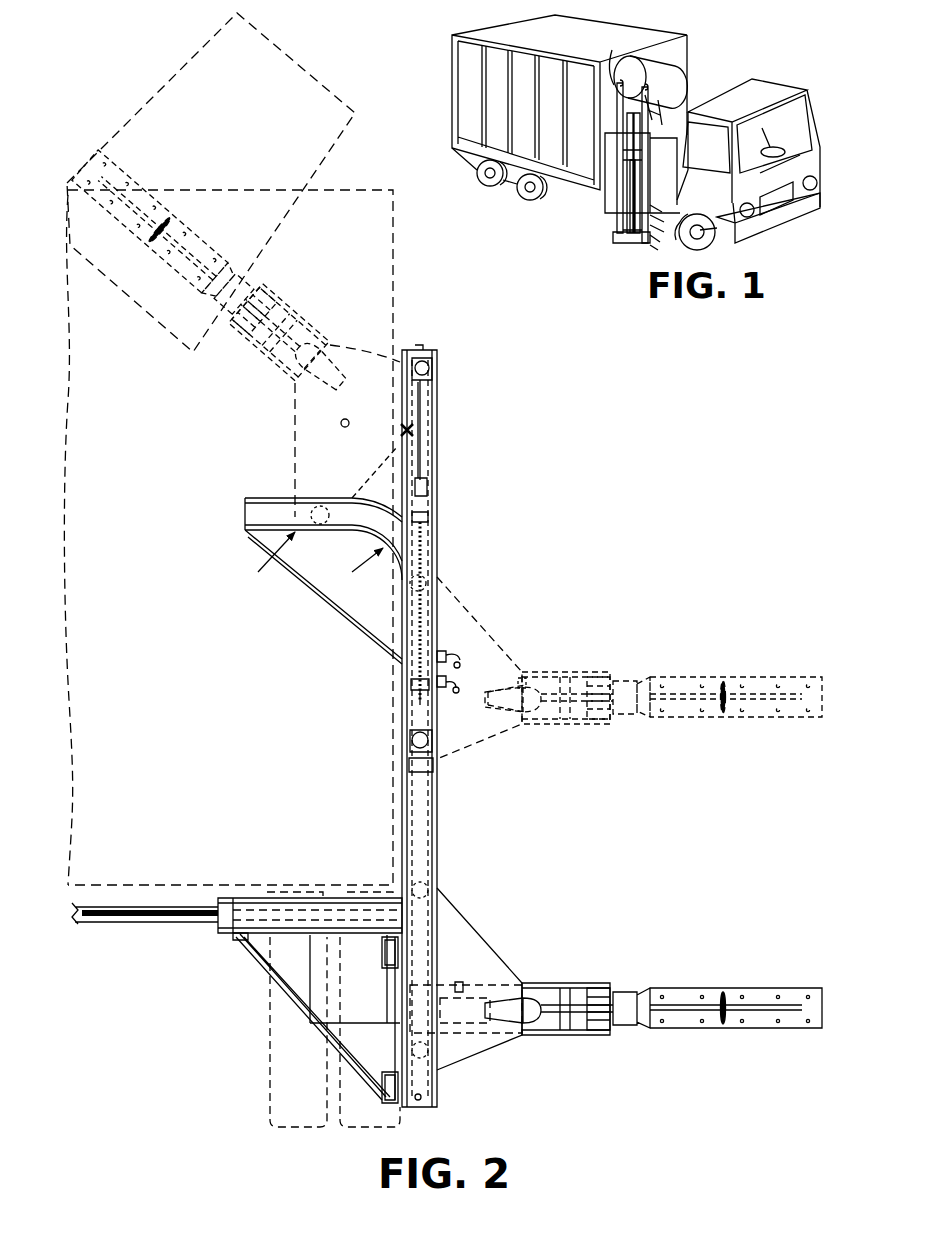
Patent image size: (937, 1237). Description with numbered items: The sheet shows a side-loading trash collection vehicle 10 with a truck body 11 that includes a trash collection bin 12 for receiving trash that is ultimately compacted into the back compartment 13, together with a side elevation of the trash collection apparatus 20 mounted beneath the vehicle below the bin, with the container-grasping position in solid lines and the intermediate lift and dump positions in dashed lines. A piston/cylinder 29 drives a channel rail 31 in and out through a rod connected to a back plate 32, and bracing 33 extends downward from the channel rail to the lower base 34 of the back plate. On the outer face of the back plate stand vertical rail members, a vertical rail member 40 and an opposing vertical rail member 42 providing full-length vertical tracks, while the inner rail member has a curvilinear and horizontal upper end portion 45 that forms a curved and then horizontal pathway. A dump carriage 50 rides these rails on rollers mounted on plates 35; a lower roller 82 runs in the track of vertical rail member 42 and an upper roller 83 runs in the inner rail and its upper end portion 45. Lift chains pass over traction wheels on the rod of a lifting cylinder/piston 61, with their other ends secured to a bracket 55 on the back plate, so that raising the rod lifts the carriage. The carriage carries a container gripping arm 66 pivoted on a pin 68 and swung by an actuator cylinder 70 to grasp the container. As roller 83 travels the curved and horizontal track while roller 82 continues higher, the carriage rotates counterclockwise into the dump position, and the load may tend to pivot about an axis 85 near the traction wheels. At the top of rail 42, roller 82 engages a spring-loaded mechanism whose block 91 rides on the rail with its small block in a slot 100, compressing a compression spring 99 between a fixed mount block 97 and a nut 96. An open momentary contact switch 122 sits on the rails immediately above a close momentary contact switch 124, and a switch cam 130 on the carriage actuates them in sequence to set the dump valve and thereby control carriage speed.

In FIG. 1, the trash collection vehicle 10 is at (617, 132).
In FIG. 1, the truck body 11 is at (655, 27).
In FIG. 2, the truck body 11 is at (396, 273).
In FIG. 1, the trash collection bin 12 is at (668, 140).
In FIG. 1, the back compartment 13 is at (520, 103).
In FIG. 2, the trash collection apparatus 20 is at (443, 570).
In FIG. 2, the piston/cylinder 29 is at (143, 914).
In FIG. 2, the channel rail 31 is at (262, 897).
In FIG. 2, the back plate 32 is at (398, 972).
In FIG. 1, the bracing 33 is at (666, 233).
In FIG. 2, the bracing 33 is at (287, 980).
In FIG. 2, the lower base 34 is at (382, 1098).
In FIG. 2, the plate 35 is at (473, 925).
In FIG. 1, the vertical rail member 40 is at (645, 62).
In FIG. 1, the vertical rail member 42 is at (612, 62).
In FIG. 2, the vertical rail member 42 is at (437, 427).
In FIG. 2, the curvilinear and horizontal upper end portion 45 is at (277, 498).
In FIG. 2, the dump carriage 50 is at (540, 980).
In FIG. 1, the bracket 55 is at (630, 237).
In FIG. 1, the lifting cylinder/piston 61 is at (630, 192).
In FIG. 2, the container gripping arm 66 is at (650, 990).
In FIG. 2, the pin 68 is at (597, 985).
In FIG. 2, the gripping arm actuator cylinder 70 is at (528, 1012).
In FIG. 2, the roller 82 is at (437, 390).
In FIG. 2, the roller 83 is at (328, 505).
In FIG. 2, the axis 85 is at (404, 431).
In FIG. 2, the block 91 is at (430, 365).
In FIG. 2, the nut 96 is at (412, 683).
In FIG. 2, the fixed mount block 97 is at (428, 517).
In FIG. 2, the compression spring 99 is at (423, 646).
In FIG. 2, the slot 100 is at (425, 440).
In FIG. 2, the open momentary contact switch 122 is at (462, 660).
In FIG. 2, the close momentary contact switch 124 is at (445, 688).
In FIG. 2, the switch cam 130 is at (340, 423).